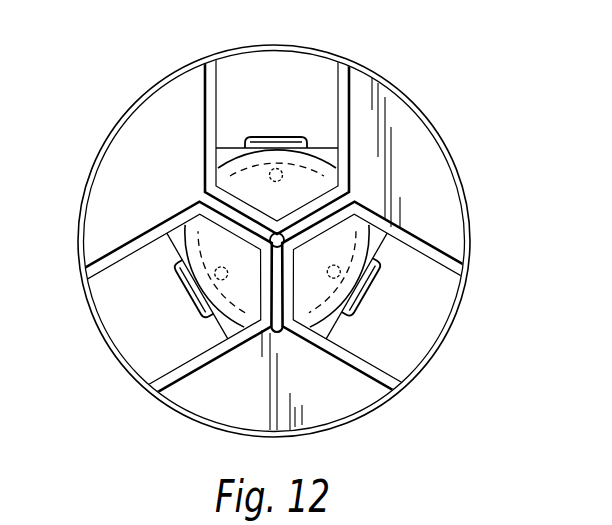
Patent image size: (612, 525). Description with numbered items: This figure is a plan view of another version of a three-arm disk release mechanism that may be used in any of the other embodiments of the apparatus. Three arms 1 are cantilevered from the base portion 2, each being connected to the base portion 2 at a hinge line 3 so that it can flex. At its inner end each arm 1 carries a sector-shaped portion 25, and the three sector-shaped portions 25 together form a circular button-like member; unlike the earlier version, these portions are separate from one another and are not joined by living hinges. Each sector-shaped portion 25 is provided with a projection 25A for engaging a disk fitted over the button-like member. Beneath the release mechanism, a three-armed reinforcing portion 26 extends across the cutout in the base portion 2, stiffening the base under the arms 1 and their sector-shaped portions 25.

The arm 1 is at (240, 80).
The base portion 2 is at (113, 204).
The hinge line 3 is at (302, 58).
The sector-shaped portion 25 is at (243, 182).
The projection 25A is at (281, 134).
The three-armed reinforcing portion 26 is at (351, 194).